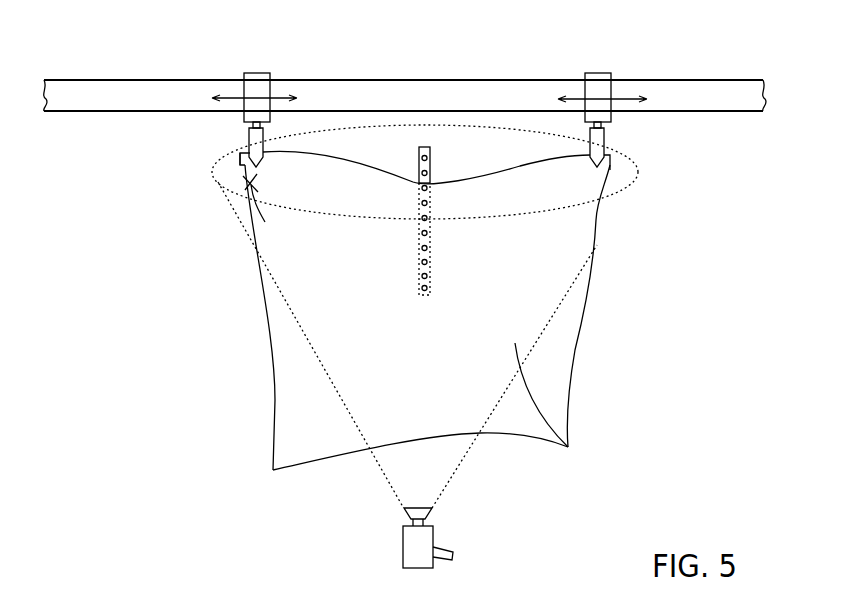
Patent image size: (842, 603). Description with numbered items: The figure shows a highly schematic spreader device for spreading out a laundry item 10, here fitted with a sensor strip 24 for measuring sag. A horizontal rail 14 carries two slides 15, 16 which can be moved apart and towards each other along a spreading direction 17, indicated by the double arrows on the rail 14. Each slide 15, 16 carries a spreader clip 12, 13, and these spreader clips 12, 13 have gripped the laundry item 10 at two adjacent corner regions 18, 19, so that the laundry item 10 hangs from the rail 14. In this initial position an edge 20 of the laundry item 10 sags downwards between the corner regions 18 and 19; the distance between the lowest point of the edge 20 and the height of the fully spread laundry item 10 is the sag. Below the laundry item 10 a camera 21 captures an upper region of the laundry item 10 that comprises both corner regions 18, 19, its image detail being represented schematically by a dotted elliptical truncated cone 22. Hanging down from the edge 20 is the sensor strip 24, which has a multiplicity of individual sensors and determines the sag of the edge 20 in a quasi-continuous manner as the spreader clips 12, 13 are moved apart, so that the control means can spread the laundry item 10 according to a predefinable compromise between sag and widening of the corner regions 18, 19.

The laundry item 10 is at (327, 443).
The spreader clip 12 is at (596, 146).
The spreader clip 13 is at (247, 160).
The rail 14 is at (74, 96).
The slide 15 is at (603, 78).
The slide 16 is at (262, 81).
The spreading direction 17 is at (218, 101).
The corner region 18 is at (240, 193).
The corner region 19 is at (590, 172).
The edge 20 is at (453, 178).
The camera 21 is at (435, 530).
The elliptical truncated cone 22 is at (540, 342).
The sensor strip 24 is at (417, 287).